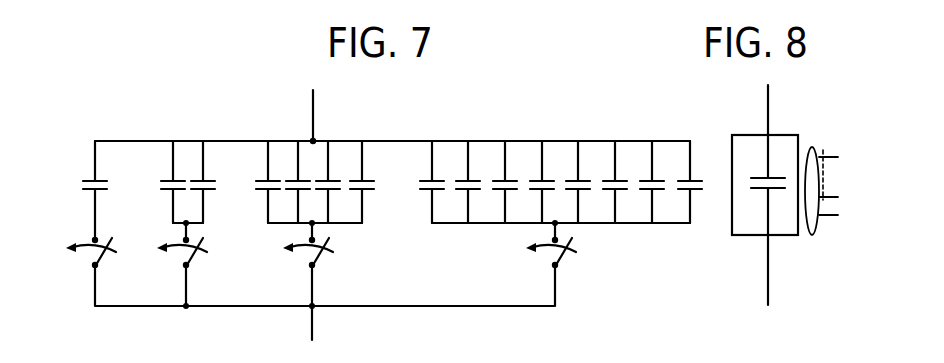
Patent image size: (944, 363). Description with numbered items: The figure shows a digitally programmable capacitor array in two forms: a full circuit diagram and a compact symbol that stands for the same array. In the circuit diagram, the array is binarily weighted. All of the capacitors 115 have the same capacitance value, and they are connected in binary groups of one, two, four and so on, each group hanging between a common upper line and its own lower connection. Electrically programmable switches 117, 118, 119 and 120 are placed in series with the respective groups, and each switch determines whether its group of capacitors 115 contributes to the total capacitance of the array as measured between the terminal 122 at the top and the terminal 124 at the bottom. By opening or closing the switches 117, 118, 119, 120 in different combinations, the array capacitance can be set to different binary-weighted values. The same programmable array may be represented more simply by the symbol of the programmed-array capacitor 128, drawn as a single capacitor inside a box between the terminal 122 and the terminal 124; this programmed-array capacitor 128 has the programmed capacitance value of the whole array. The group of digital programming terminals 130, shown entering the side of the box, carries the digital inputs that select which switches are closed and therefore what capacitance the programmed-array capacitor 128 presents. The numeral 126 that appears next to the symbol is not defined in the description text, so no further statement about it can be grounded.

In FIG. 7, the capacitors 115 is at (200, 178).
In FIG. 7, the electrically programmable switch 117 is at (100, 262).
In FIG. 7, the electrically programmable switch 118 is at (191, 262).
In FIG. 7, the electrically programmable switch 119 is at (317, 262).
In FIG. 7, the electrically programmable switch 120 is at (560, 262).
In FIG. 7, the terminal 122 is at (316, 104).
In FIG. 8, the terminal 122 is at (771, 104).
In FIG. 7, the terminal 124 is at (313, 318).
In FIG. 8, the terminal 124 is at (771, 296).
In FIG. 8, the digitally controlled capacitor 126 is at (748, 178).
In FIG. 7, the programmed-array capacitor 128 is at (182, 322).
In FIG. 8, the programmed-array capacitor 128 is at (732, 264).
In FIG. 8, the digital programming terminals 130 is at (812, 235).